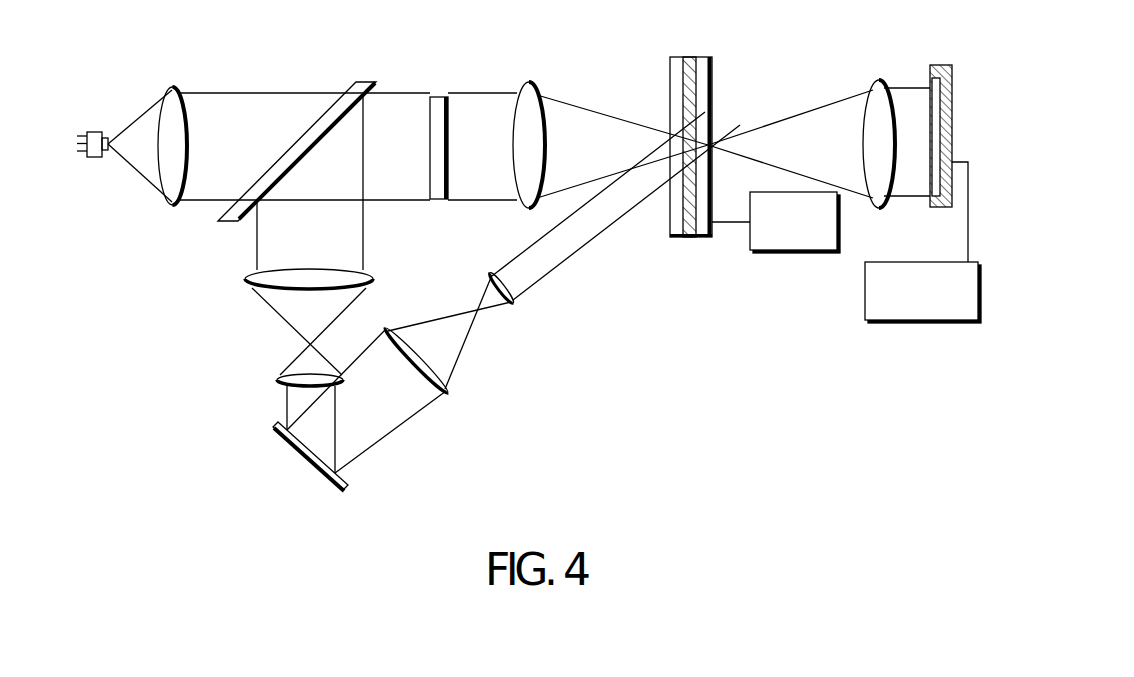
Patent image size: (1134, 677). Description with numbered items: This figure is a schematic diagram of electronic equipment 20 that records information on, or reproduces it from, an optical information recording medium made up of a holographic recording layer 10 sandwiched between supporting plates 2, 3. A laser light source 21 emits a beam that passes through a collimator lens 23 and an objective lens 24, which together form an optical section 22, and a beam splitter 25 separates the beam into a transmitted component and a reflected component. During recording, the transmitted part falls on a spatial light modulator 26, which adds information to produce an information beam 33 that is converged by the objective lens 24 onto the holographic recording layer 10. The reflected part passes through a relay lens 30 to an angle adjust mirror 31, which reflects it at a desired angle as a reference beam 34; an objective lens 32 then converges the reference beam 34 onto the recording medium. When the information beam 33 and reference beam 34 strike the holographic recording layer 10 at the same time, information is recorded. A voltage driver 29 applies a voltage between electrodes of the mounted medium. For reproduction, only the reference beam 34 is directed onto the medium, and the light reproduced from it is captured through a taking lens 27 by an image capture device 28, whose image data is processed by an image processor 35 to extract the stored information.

The supporting plate 2 is at (677, 57).
The supporting plate 3 is at (705, 238).
The holographic recording layer 10 is at (691, 57).
The imaging apparatus 20 is at (152, 381).
The laser light source 21 is at (93, 131).
The optical section 22 is at (192, 259).
The collimator lens 23 is at (172, 87).
The objective lens 24 is at (529, 84).
The beam splitter 25 is at (364, 81).
The spatial light modulator 26 is at (438, 97).
The taking lens 27 is at (879, 81).
The image capture device 28 is at (937, 65).
The voltage driver 29 is at (790, 251).
The relay lens 30 is at (238, 281).
The angle adjust mirror 31 is at (343, 490).
The objective lens 32 is at (461, 336).
The information beam 33 is at (588, 118).
The reference beam 34 is at (602, 232).
The image processor 35 is at (937, 321).